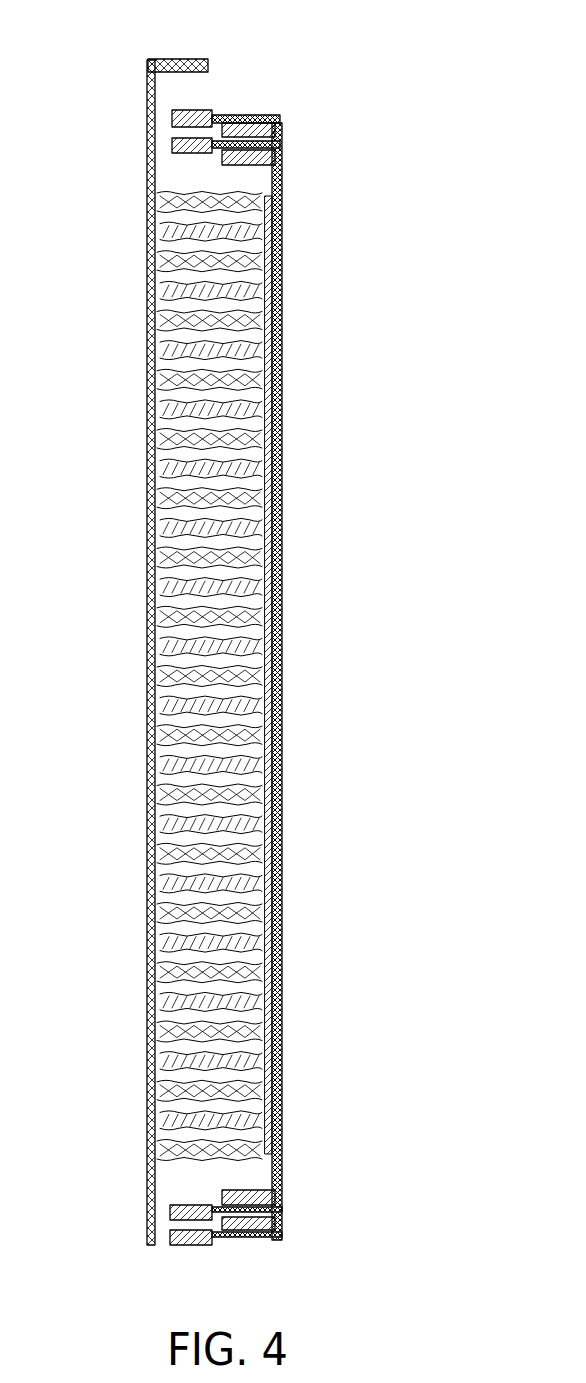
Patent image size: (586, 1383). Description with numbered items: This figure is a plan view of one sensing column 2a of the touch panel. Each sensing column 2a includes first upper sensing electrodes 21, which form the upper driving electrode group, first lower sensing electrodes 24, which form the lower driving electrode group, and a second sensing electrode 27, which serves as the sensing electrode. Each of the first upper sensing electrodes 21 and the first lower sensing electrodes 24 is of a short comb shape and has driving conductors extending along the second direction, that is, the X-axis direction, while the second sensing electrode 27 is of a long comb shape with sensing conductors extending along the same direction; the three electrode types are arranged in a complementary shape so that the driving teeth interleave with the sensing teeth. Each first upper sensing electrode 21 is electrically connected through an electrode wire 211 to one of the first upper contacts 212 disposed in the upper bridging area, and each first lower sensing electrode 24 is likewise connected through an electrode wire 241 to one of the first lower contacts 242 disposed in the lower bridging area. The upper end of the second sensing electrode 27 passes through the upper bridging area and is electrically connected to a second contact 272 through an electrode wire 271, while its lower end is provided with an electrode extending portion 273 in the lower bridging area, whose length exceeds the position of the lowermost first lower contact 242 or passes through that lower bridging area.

The sensing column 2a is at (252, 62).
The first upper sensing electrodes 21 is at (293, 375).
The electrode wire 211 is at (283, 173).
The first upper contacts 212 is at (249, 135).
The first lower sensing electrodes 24 is at (288, 963).
The electrode wire 241 is at (282, 1178).
The first lower contacts 242 is at (247, 1225).
The second sensing electrode 27 is at (140, 415).
The electrode wire 271 is at (150, 155).
The second contact 272 is at (168, 69).
The electrode extending portion 273 is at (150, 1196).